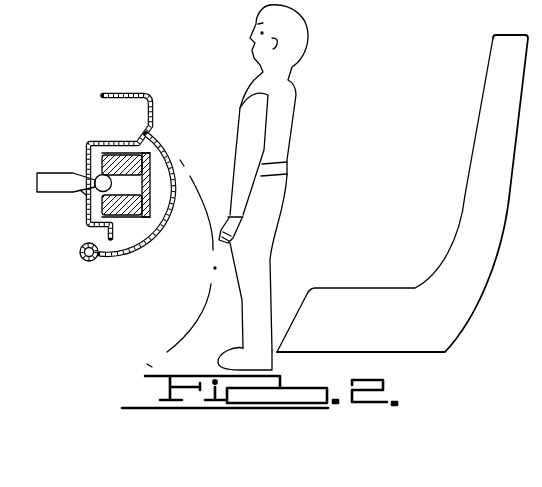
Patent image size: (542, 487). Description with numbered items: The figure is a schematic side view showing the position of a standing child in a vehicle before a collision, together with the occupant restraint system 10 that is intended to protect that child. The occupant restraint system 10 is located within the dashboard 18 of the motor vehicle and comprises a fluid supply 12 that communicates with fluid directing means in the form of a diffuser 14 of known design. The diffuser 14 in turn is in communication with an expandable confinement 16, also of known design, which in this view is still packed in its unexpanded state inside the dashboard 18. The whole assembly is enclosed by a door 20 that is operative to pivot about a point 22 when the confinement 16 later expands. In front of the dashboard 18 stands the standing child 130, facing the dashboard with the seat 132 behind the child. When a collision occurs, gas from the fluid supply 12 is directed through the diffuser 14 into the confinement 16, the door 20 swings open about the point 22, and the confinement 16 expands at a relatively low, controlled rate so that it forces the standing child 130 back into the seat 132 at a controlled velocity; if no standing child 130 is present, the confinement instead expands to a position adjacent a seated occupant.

The occupant restraint system 10 is at (78, 150).
The fluid supply 12 is at (51, 165).
The diffuser 14 is at (90, 194).
The expandable confinement 16 is at (162, 132).
The dashboard 18 is at (146, 93).
The door 20 is at (133, 253).
The pivot point 22 is at (89, 262).
The standing child 130 is at (302, 107).
The seat 132 is at (493, 52).